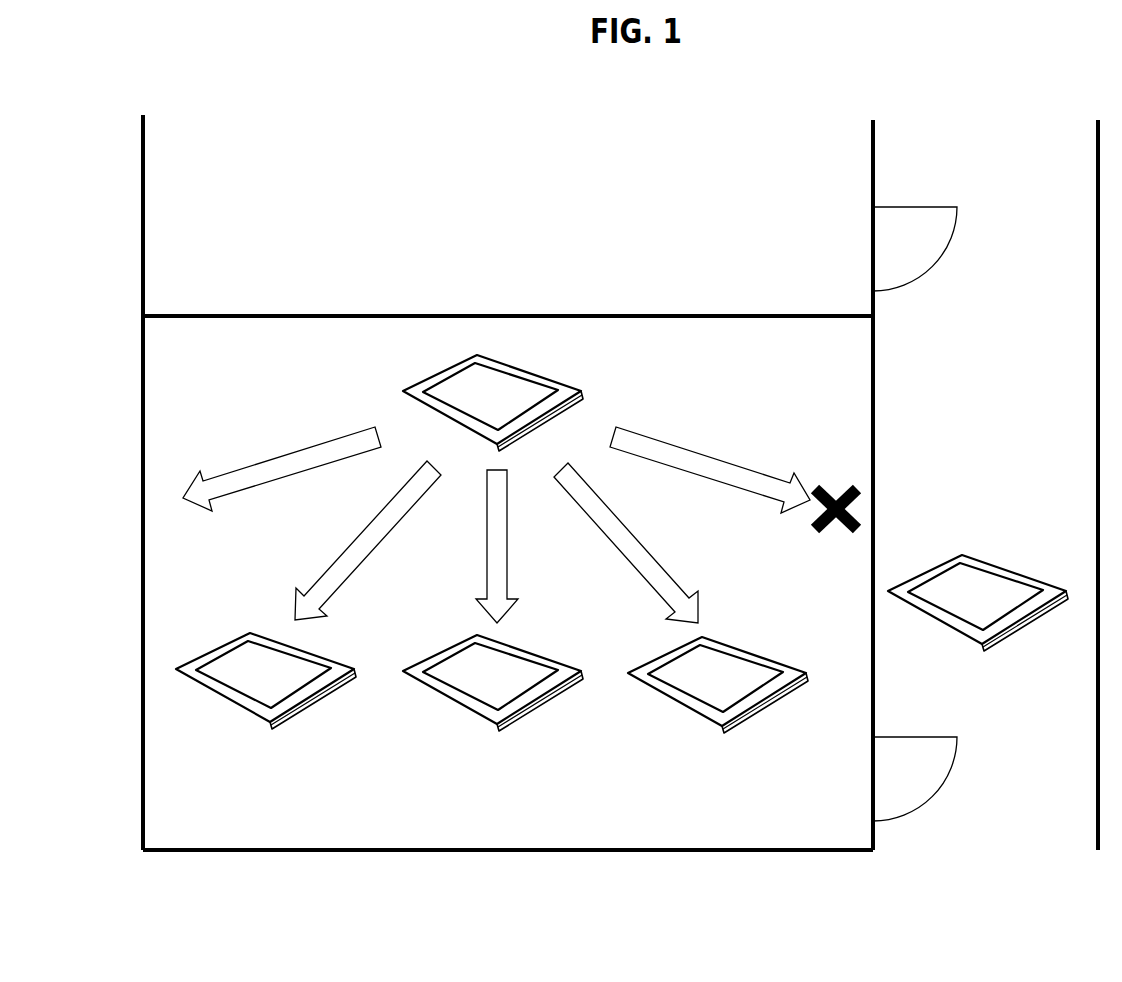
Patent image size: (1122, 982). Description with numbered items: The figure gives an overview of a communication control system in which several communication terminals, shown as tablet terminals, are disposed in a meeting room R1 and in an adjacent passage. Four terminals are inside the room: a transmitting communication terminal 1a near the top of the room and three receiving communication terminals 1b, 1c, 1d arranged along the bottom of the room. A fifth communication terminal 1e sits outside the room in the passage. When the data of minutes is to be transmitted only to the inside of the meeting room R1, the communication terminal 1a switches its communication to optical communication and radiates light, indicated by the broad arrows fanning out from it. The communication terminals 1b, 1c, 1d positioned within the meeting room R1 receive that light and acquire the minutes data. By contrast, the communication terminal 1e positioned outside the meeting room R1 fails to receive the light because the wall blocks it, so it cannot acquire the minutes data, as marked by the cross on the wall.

The meeting room R1 is at (143, 415).
The communication terminal 1a is at (435, 370).
The communication terminal 1b is at (215, 650).
The communication terminal 1c is at (438, 652).
The communication terminal 1d is at (750, 652).
The communication terminal 1e is at (1013, 570).